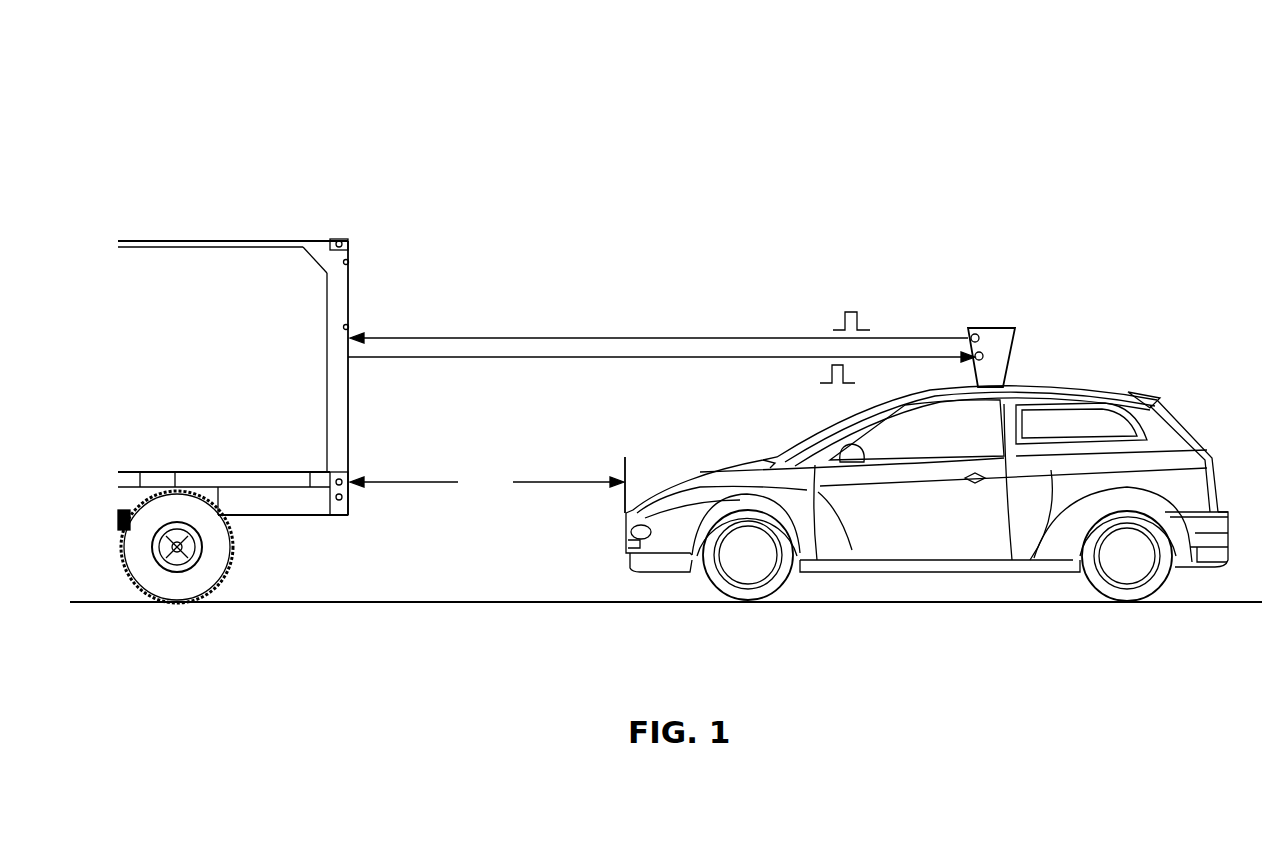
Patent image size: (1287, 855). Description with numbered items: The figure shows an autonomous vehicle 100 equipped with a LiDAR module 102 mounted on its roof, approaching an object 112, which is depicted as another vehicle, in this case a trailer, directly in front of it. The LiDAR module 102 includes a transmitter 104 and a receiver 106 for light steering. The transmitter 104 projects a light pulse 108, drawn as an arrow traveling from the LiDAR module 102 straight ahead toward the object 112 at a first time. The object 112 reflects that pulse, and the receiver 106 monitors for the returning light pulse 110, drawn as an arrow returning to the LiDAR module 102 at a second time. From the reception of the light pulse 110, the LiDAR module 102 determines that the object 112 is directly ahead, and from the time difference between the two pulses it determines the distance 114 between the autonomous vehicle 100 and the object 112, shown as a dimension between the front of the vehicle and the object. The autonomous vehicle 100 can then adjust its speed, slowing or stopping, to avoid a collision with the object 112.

The autonomous vehicle 100 is at (1105, 390).
The LiDAR module 102 is at (1013, 328).
The transmitter 104 is at (970, 328).
The receiver 106 is at (983, 355).
The light pulse 108 is at (852, 312).
The light pulse 110 is at (820, 375).
The object 112 is at (305, 241).
The distance 114 is at (487, 485).